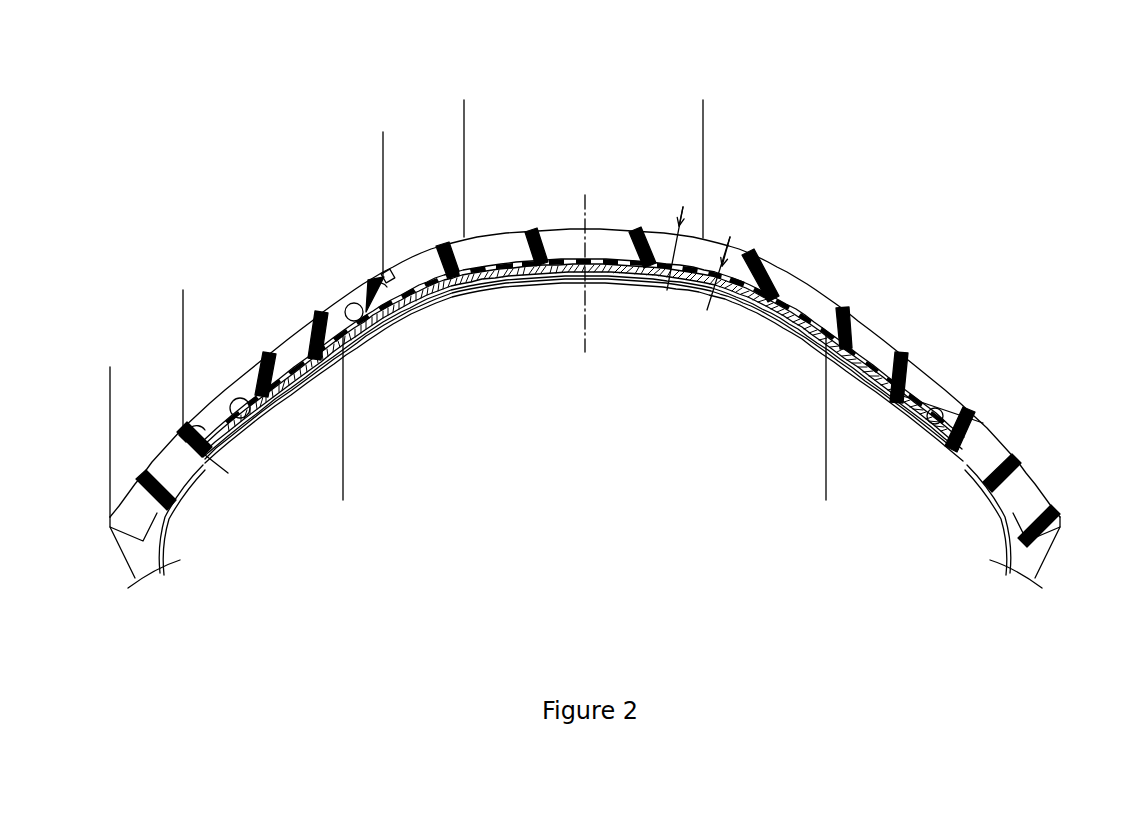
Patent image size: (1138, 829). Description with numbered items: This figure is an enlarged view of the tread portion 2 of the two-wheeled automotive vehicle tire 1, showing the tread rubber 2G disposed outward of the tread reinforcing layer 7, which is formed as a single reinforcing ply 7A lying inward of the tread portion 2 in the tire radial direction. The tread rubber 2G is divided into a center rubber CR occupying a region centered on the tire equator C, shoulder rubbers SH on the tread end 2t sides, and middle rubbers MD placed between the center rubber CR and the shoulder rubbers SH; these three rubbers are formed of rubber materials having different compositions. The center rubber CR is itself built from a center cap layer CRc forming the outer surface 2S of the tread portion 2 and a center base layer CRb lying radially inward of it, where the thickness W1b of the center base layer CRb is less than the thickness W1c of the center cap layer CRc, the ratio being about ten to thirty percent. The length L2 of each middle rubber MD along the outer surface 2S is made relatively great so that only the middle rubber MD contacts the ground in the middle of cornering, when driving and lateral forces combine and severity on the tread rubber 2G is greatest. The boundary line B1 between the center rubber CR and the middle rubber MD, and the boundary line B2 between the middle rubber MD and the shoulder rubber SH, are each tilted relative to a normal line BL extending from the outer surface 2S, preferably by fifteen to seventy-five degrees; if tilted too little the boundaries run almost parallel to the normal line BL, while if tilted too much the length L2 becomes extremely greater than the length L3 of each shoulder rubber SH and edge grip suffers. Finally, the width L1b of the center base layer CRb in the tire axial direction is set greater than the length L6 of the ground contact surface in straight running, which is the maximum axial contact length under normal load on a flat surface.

The two-wheeled automotive vehicle tire 1 is at (829, 198).
The tread portion 2 is at (585, 403).
The tread rubber 2G is at (851, 300).
The outer surface of the tread portion 2S is at (735, 275).
The tread end 2t is at (109, 516).
The tread reinforcing layer 7 is at (583, 391).
The reinforcing ply 7A is at (936, 424).
The normal line BL is at (232, 475).
The boundary line between the center rubber and the middle rubber B1 is at (355, 322).
The boundary line between the middle rubber and the shoulder rubber B2 is at (257, 413).
The middle rubber MD is at (292, 356).
The shoulder rubber SH is at (171, 441).
The center rubber CR is at (593, 157).
The center cap layer CRc is at (516, 250).
The center base layer CRb is at (557, 260).
The thickness of the center cap layer W1c is at (679, 264).
The thickness of the center base layer W1b is at (716, 304).
The tire equator C is at (584, 298).
The length of the ground contact surface in the tire axial direction L6 is at (464, 107).
The length of the middle rubber along the outer surface L2 is at (380, 137).
The length of the shoulder rubber along the outer surface L3 is at (183, 290).
The width of the center base layer in the tire axial direction L1b is at (343, 490).